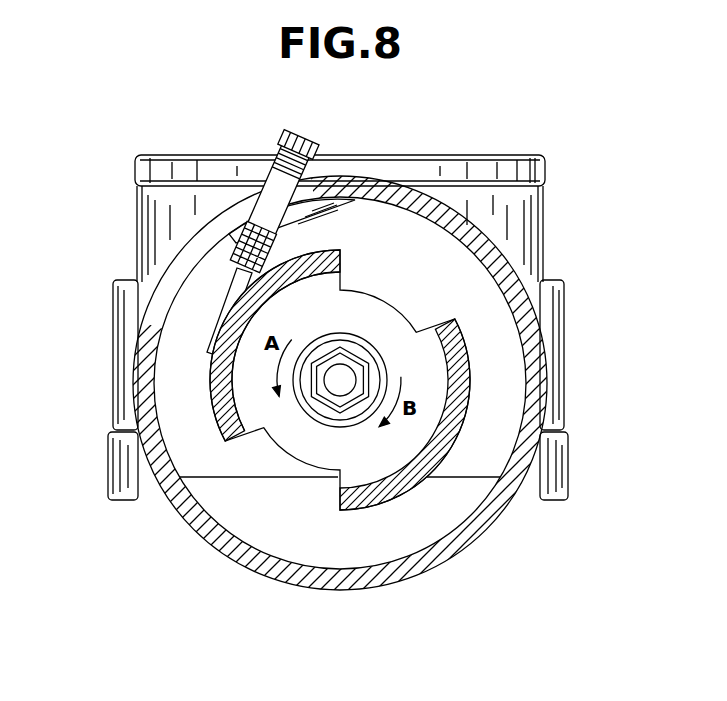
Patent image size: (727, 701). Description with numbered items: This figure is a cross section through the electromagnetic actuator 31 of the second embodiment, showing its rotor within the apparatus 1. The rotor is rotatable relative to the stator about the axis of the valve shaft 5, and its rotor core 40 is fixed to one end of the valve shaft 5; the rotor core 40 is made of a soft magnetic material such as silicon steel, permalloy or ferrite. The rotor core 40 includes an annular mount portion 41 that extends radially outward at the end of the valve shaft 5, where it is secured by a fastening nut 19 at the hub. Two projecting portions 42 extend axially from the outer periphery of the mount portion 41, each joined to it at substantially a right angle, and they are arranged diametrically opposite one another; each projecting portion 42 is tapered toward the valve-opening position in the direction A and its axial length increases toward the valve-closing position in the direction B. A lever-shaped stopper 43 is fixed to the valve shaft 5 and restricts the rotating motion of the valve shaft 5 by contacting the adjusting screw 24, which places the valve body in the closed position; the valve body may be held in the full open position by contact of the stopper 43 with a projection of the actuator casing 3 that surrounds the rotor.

The fluid pressure regulating apparatus 1 is at (530, 152).
The actuator casing 3 is at (512, 240).
The valve shaft 5 is at (340, 384).
The fastening nut 19 is at (327, 390).
The adjusting screw 24 is at (297, 143).
The electromagnetic actuator 31 is at (205, 385).
The rotor core 40 is at (357, 512).
The annular mount portion 41 is at (370, 320).
The projecting portions 42 is at (233, 447).
The lever-shaped stopper 43 is at (230, 290).